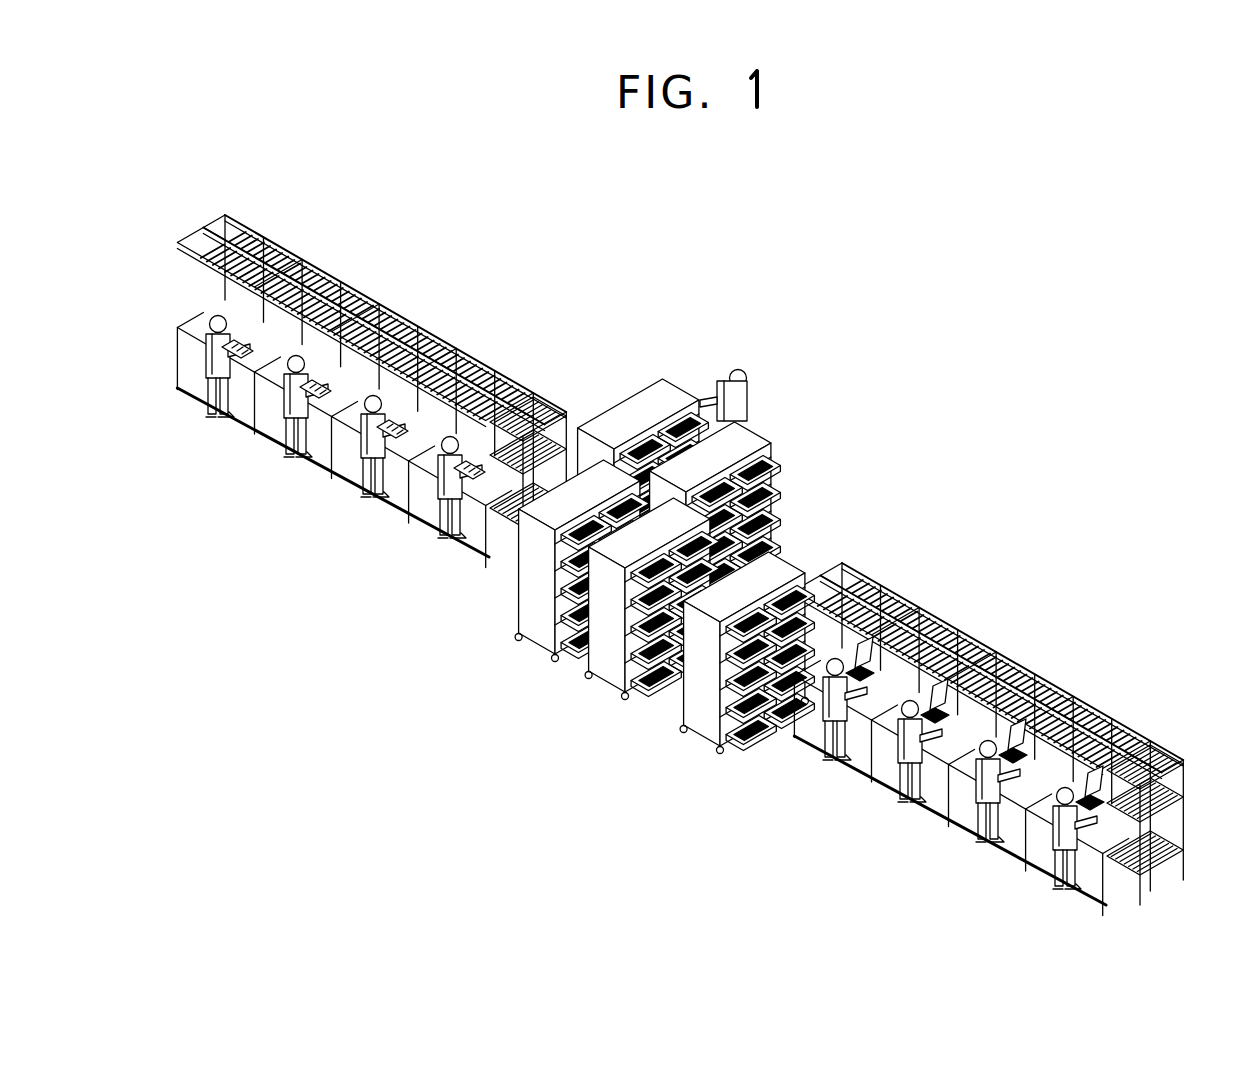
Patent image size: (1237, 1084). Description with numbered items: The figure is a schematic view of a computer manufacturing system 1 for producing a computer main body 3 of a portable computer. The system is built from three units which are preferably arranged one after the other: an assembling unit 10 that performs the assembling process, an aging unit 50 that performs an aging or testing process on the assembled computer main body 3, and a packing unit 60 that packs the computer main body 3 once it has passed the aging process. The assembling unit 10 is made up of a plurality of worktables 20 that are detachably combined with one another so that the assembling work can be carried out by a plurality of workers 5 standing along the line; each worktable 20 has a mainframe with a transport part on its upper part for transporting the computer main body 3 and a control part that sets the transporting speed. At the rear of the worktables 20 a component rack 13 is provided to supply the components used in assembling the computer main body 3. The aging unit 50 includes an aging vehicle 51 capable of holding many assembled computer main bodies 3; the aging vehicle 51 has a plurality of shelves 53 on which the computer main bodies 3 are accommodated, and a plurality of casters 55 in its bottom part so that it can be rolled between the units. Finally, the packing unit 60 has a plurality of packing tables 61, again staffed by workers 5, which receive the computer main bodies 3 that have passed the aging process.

The computer manufacturing system 1 is at (700, 555).
The computer main body 3 is at (1160, 860).
The workers 5 is at (364, 503).
The assembling unit 10 is at (998, 730).
The component rack 13 is at (437, 332).
The worktables 20 is at (1027, 870).
The aging unit 50 is at (659, 603).
The aging vehicle 51 is at (530, 640).
The shelves 53 is at (773, 737).
The casters 55 is at (710, 753).
The packing unit 60 is at (371, 379).
The packing tables 61 is at (493, 476).